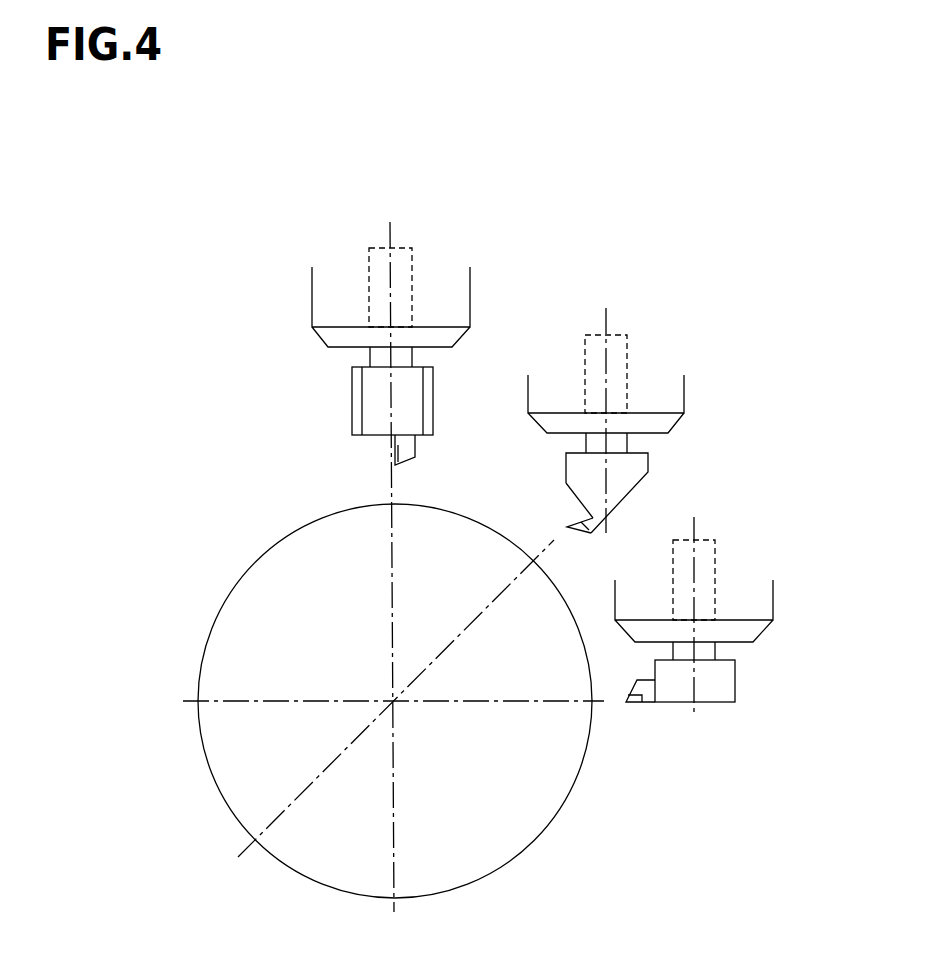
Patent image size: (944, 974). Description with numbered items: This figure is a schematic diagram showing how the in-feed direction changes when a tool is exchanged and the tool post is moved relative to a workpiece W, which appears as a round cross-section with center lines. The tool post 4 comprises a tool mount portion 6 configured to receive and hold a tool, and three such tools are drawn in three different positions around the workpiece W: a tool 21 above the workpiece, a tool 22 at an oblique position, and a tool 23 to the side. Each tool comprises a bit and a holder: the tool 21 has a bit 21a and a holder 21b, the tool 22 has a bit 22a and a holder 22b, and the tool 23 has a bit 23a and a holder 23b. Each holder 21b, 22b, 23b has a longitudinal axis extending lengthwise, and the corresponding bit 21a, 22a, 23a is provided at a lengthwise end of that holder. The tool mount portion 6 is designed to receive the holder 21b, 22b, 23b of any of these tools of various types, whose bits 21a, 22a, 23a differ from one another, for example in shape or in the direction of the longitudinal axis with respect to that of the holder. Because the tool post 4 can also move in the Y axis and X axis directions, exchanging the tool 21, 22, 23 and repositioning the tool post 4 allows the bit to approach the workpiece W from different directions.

The tool post 4 is at (450, 295).
The tool mount portion 6 is at (397, 247).
The tool 21 is at (407, 398).
The bit 21a is at (393, 442).
The holder 21b is at (377, 363).
The tool 22 is at (628, 468).
The bit 22a is at (585, 510).
The holder 22b is at (612, 443).
The tool 23 is at (718, 683).
The bit 23a is at (648, 693).
The holder 23b is at (697, 652).
The workpiece W is at (514, 845).